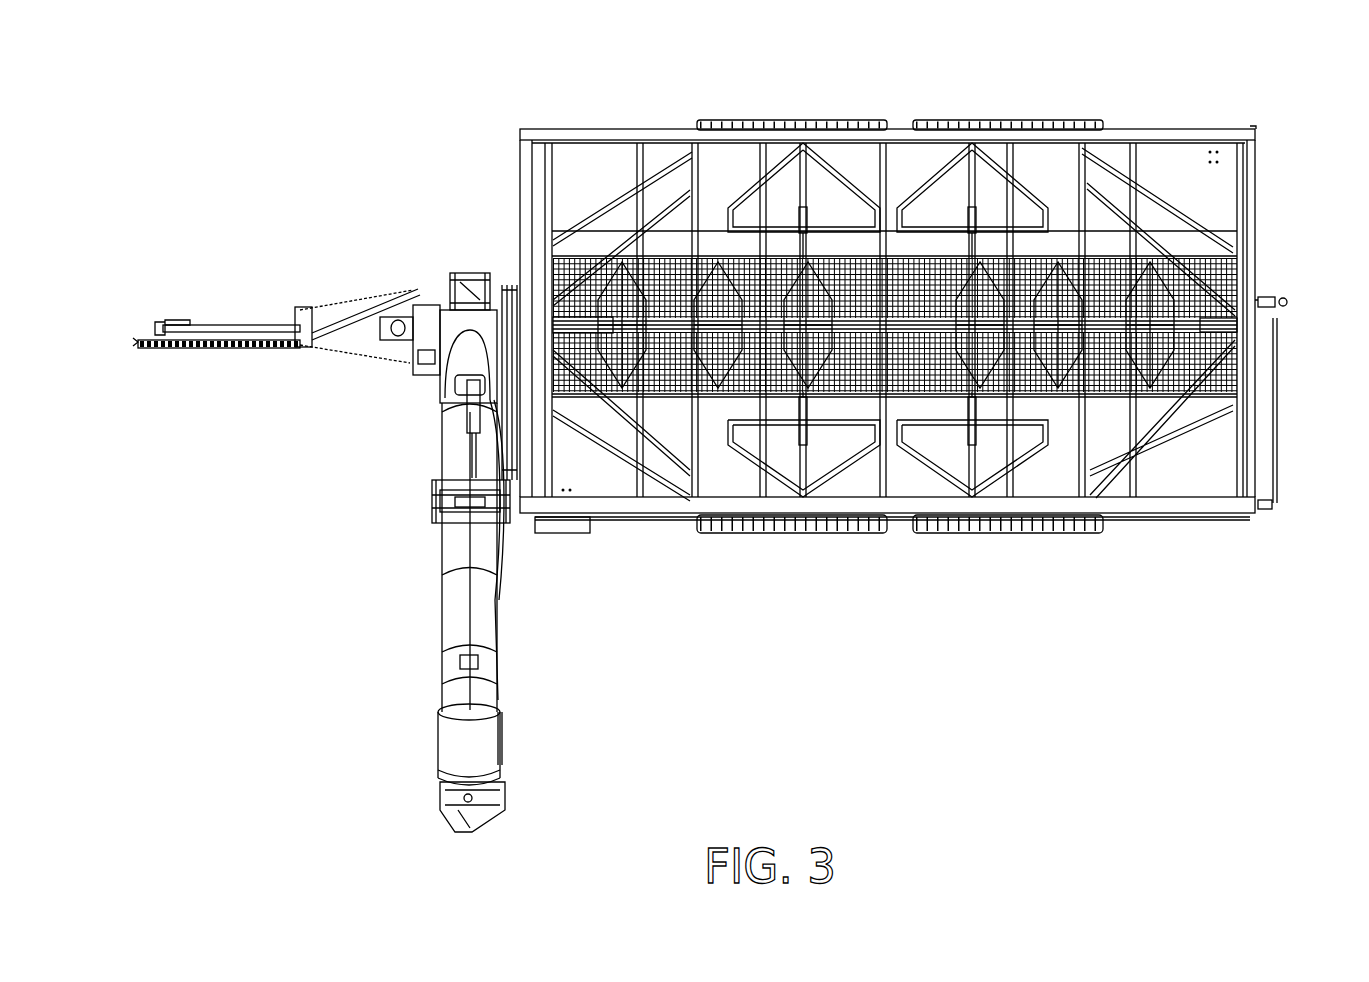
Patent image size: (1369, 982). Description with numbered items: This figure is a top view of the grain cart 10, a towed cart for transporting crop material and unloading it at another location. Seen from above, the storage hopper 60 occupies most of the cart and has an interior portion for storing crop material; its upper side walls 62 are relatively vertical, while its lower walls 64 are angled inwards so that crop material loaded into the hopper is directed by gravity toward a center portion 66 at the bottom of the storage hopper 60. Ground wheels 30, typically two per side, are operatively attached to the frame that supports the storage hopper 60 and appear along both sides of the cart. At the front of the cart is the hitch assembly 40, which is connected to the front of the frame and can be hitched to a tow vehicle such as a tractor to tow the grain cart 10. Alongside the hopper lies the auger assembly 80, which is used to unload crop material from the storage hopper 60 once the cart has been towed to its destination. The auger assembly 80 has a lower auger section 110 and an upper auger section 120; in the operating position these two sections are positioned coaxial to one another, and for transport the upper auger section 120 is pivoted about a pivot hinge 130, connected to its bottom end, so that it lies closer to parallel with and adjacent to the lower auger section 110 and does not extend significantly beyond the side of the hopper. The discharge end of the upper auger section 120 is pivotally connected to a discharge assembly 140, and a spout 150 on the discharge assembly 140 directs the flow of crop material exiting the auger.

The grain cart 10 is at (1052, 666).
The ground wheels 30 is at (820, 120).
The hitch assembly 40 is at (350, 293).
The storage hopper 60 is at (1189, 129).
The upper side walls 62 is at (1122, 129).
The lower walls 64 is at (1202, 197).
The center portion 66 is at (665, 465).
The auger assembly 80 is at (405, 664).
The lower auger section 110 is at (445, 432).
The upper auger section 120 is at (458, 607).
The pivot hinge 130 is at (435, 497).
The discharge assembly 140 is at (483, 749).
The spout 150 is at (440, 804).